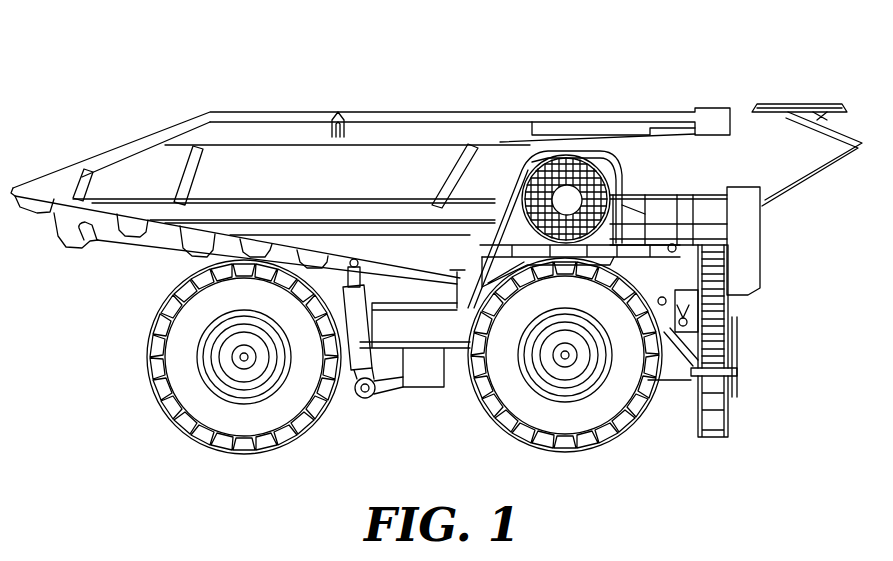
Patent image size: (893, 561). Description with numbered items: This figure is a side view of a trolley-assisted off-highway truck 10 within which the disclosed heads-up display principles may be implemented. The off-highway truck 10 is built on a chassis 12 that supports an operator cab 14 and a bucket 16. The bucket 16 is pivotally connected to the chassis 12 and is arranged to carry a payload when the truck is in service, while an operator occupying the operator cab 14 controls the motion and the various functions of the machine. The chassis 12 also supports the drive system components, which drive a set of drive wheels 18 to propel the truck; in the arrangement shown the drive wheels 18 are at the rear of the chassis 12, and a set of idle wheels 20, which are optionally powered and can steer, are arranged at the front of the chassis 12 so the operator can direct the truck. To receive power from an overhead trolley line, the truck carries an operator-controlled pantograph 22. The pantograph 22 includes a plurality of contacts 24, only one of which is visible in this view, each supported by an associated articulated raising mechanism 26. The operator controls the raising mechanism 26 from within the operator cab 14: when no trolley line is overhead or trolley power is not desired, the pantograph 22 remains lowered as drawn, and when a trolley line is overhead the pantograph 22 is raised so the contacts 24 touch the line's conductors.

The trolley-assisted off-highway truck 10 is at (590, 50).
The chassis 12 is at (440, 330).
The operator cab 14 is at (628, 182).
The bucket 16 is at (263, 114).
The drive wheels 18 is at (163, 407).
The idle wheels 20 is at (632, 428).
The pantograph 22 is at (803, 287).
The contacts 24 is at (777, 101).
The articulated raising mechanism 26 is at (796, 205).